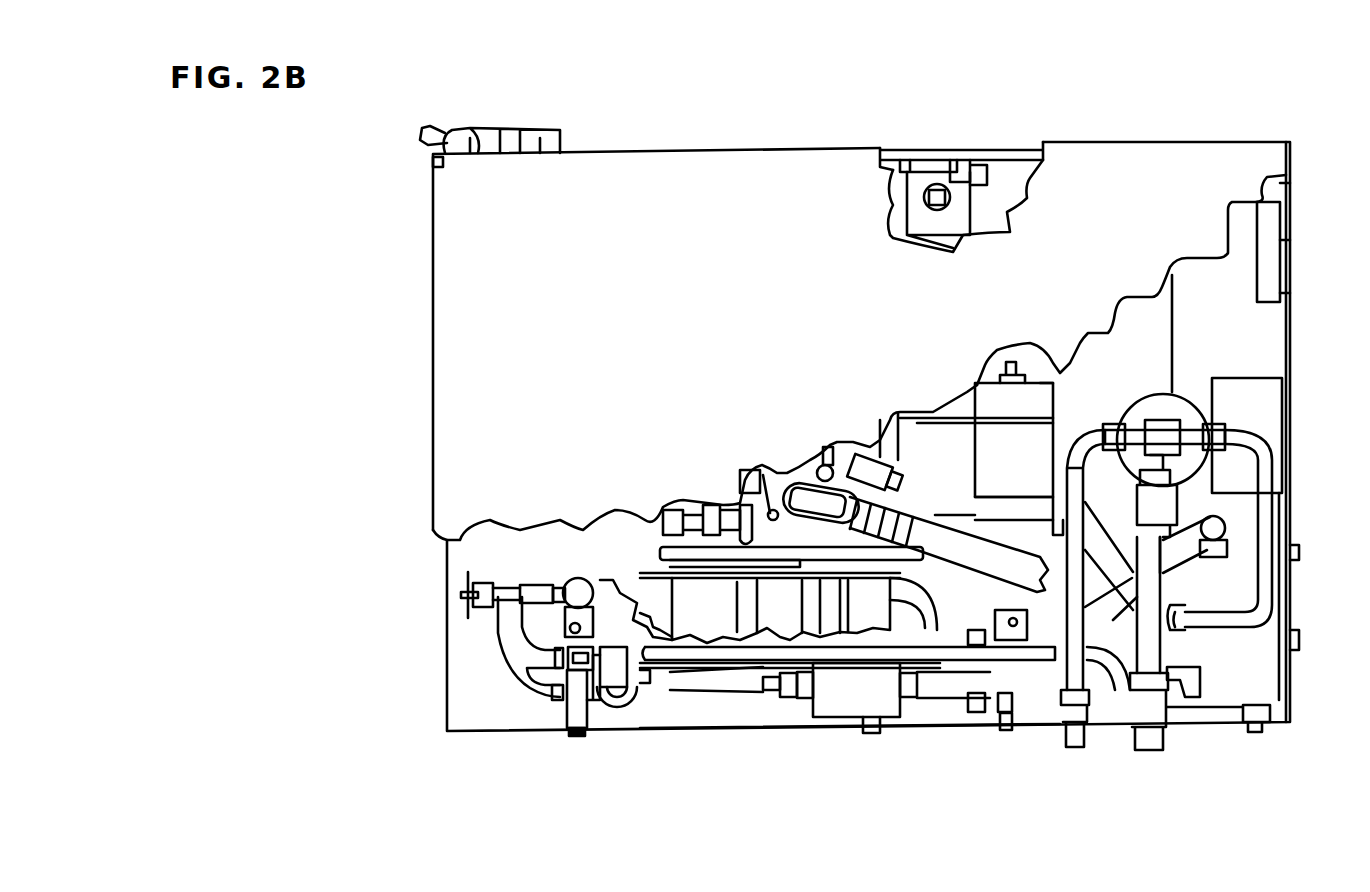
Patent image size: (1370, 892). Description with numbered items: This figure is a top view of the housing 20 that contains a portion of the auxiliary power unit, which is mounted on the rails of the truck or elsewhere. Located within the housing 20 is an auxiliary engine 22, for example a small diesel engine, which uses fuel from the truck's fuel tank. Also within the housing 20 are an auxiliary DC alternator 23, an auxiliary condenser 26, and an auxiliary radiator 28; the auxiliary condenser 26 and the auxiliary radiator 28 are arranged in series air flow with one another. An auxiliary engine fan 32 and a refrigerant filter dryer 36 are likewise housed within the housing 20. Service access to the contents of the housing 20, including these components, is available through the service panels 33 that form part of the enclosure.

The housing 20 is at (1137, 140).
The service panels 33 is at (686, 167).
The auxiliary DC alternator 23 is at (1055, 427).
The auxiliary engine 22 is at (680, 505).
The auxiliary engine fan 32 is at (640, 600).
The refrigerant filter dryer 36 is at (1185, 465).
The auxiliary condenser 26 is at (1227, 582).
The auxiliary radiator 28 is at (1267, 672).